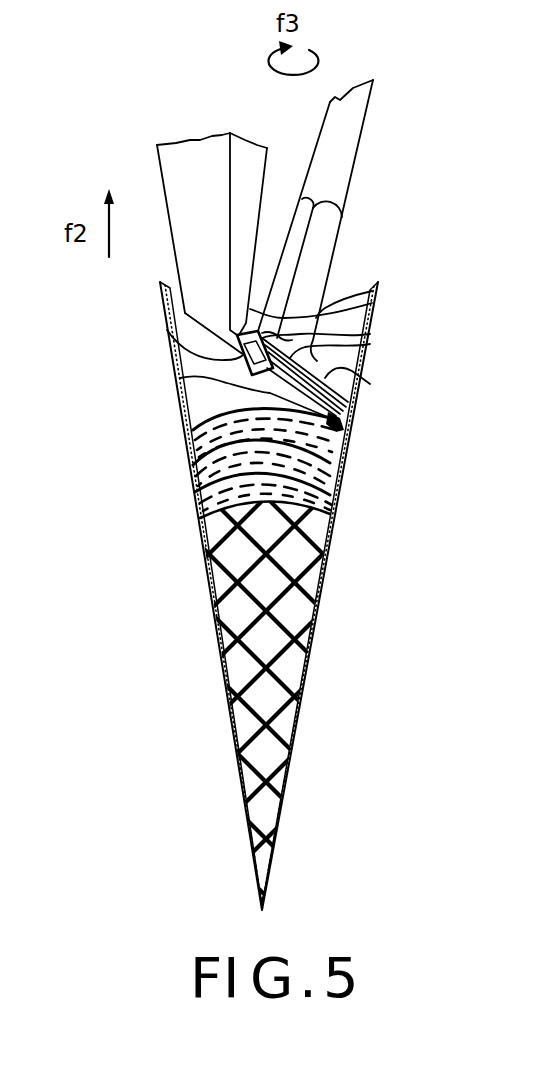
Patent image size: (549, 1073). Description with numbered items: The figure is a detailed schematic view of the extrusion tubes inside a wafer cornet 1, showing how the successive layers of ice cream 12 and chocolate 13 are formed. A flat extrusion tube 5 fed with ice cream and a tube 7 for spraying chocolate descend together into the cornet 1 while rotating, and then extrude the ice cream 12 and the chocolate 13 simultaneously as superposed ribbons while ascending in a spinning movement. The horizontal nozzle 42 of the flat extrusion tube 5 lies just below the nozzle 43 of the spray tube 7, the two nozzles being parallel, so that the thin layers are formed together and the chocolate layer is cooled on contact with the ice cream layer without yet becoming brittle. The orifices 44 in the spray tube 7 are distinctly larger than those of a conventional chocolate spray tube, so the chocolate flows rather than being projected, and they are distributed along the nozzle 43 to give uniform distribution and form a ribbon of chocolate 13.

The wafer cornet 1 is at (215, 640).
The extrusion tube 5 is at (177, 200).
The tube for spraying chocolate 7 is at (340, 184).
The ice cream 12 is at (180, 378).
The chocolate 13 is at (370, 384).
The horizontal nozzle 42 is at (167, 338).
The nozzle 43 is at (372, 300).
The orifices 44 is at (370, 337).